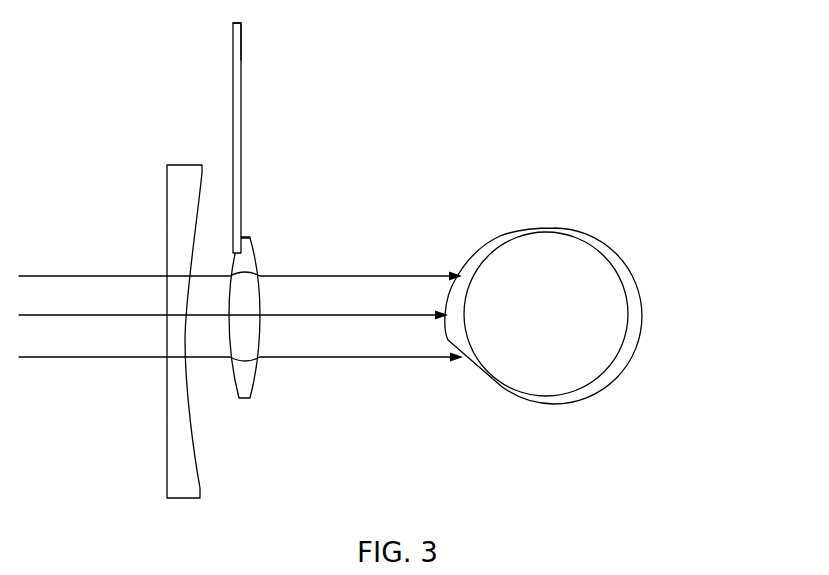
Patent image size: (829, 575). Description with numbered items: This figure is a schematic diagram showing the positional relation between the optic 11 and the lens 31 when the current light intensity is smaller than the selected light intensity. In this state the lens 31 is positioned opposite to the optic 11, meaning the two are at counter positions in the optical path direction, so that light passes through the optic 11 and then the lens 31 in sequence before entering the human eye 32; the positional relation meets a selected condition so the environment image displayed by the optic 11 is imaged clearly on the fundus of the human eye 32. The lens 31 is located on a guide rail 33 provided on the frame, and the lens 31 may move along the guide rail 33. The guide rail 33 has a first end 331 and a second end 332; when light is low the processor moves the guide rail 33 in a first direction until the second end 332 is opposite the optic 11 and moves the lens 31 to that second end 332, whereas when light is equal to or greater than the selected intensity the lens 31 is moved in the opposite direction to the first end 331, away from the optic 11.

The optic 11 is at (182, 165).
The lens 31 is at (250, 240).
The human eye 32 is at (618, 330).
The guide rail 33 is at (241, 126).
The first end 331 is at (241, 26).
The second end 332 is at (241, 236).